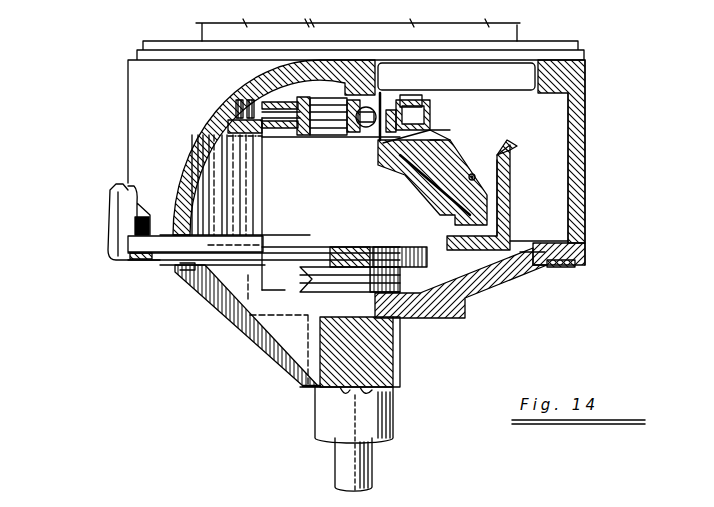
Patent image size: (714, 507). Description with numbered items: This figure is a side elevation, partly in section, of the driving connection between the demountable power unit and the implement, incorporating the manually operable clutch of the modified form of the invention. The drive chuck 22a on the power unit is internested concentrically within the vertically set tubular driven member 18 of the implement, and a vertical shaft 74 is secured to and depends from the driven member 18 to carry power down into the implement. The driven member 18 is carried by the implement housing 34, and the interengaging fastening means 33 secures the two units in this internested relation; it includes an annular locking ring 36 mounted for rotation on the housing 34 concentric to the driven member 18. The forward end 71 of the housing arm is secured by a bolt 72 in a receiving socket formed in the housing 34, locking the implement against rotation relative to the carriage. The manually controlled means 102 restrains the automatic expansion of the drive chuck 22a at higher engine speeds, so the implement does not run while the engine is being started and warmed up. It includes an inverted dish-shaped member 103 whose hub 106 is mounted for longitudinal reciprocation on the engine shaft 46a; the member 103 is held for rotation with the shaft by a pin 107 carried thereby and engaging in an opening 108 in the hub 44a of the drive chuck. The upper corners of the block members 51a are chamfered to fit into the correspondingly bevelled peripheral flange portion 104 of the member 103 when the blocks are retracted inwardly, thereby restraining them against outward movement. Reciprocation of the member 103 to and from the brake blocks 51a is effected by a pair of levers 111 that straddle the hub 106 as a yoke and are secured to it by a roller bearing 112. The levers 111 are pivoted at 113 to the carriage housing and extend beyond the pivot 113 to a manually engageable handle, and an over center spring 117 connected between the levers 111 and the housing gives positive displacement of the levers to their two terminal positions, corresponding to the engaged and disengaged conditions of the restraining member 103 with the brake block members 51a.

The driven member 18 is at (508, 170).
The drive chuck 22a is at (498, 217).
The interengaging fastening means 33 is at (97, 235).
The implement housing 34 is at (473, 322).
The annular locking ring 36 is at (565, 268).
The hub of the drive chuck 44a is at (400, 170).
The engine shaft 46a is at (300, 70).
The block members 51a is at (485, 200).
The forward end of arm 71 is at (372, 360).
The bolt 72 is at (362, 405).
The vertical shaft 74 is at (362, 460).
The manually controlled means 102 is at (495, 141).
The inverted dish-shaped member 103 is at (447, 126).
The bevelled peripheral flange portion 104 is at (505, 152).
The hub 106 is at (481, 151).
The pin 107 is at (444, 139).
The opening 108 is at (412, 176).
The levers 111 is at (240, 100).
The roller bearing 112 is at (388, 106).
The pivot 113 is at (292, 118).
The over center spring 117 is at (342, 128).